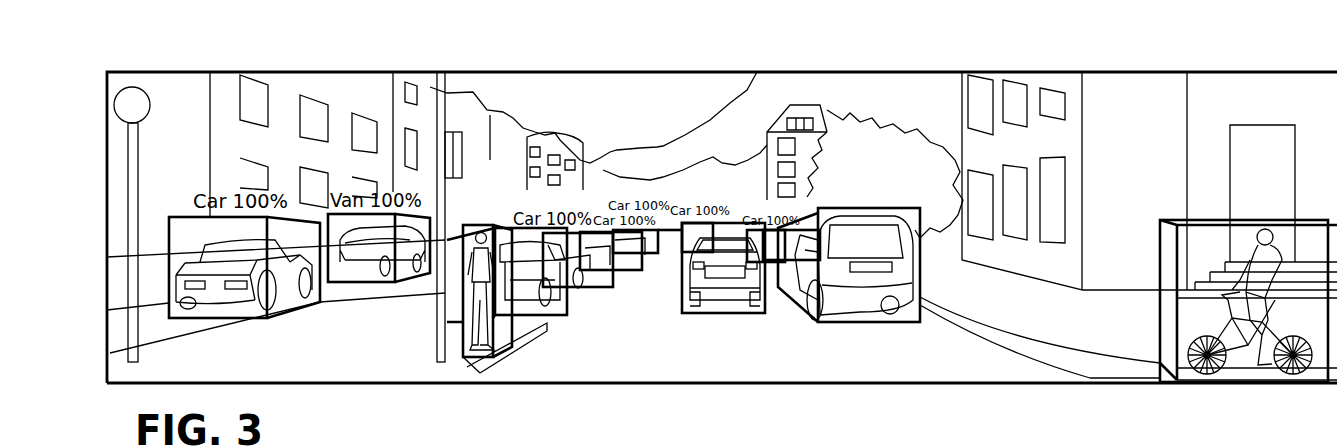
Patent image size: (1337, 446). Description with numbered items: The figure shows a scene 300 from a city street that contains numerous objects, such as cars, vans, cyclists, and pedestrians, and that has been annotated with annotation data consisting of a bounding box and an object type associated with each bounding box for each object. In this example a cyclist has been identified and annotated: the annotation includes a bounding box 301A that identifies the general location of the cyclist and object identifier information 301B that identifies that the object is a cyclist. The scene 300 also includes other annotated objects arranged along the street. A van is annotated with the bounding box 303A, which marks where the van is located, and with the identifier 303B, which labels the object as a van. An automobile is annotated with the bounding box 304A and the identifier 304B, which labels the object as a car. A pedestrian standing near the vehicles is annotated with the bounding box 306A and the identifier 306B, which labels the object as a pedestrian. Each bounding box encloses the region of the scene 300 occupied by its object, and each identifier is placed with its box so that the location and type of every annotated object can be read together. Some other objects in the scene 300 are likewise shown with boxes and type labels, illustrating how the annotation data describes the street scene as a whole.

The scene 300 is at (770, 93).
The bounding box 301A is at (1160, 338).
The object identifier information 301B is at (1270, 188).
The bounding box 303A is at (865, 323).
The identifier 303B is at (873, 177).
The bounding box 304A is at (735, 305).
The identifier 304B is at (744, 210).
The bounding box 306A is at (482, 354).
The identifier 306B is at (492, 182).